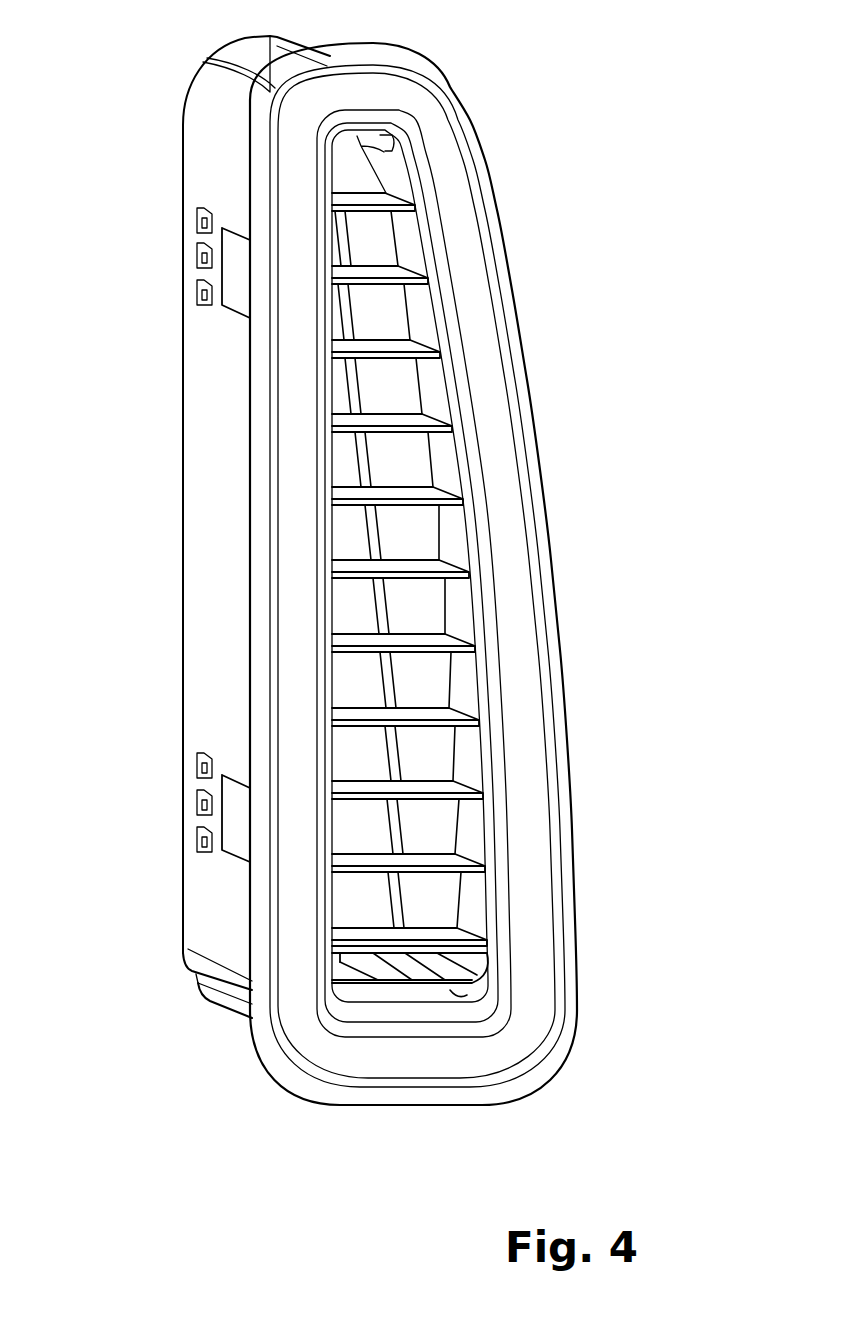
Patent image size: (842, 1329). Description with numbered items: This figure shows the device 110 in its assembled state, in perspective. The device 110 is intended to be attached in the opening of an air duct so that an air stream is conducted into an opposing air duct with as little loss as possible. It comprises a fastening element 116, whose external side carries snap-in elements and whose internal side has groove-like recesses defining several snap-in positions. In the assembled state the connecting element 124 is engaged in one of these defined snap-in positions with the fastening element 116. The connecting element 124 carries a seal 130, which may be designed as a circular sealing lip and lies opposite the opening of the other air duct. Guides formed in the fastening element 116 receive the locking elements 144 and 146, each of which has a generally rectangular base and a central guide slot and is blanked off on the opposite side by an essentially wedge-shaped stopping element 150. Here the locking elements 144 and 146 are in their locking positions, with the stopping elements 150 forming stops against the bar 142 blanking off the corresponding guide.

The device 110 is at (548, 84).
The fastening element 116 is at (200, 500).
The connecting element 124 is at (460, 612).
The seal 130 is at (522, 1082).
The bar 142 is at (440, 970).
The locking element 144 is at (357, 138).
The locking element 146 is at (452, 997).
The stopping element 150 is at (378, 995).